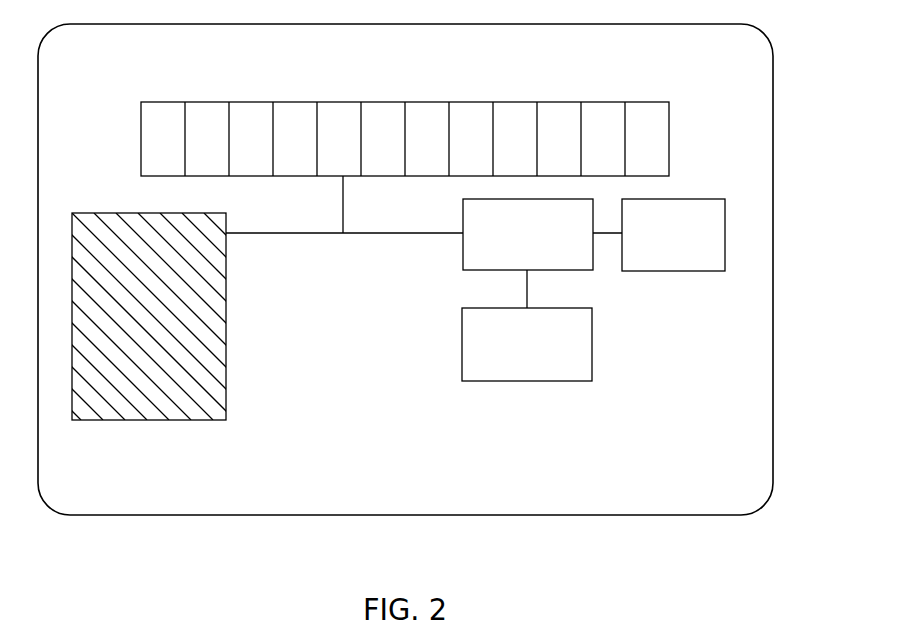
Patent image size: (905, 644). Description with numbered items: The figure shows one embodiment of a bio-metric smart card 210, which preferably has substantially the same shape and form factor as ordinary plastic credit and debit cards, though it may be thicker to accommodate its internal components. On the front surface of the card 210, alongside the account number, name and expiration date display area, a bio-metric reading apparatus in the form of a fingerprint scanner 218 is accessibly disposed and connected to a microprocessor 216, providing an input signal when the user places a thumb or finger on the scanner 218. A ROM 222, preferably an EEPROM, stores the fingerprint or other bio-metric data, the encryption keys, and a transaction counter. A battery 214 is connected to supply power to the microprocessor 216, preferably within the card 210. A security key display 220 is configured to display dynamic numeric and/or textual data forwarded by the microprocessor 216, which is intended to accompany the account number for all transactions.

The bio-metric smart card 210 is at (773, 153).
The security key display 220 is at (141, 135).
The fingerprint scanner 218 is at (92, 420).
The microprocessor 216 is at (463, 270).
The battery 214 is at (687, 272).
The ROM 222 is at (592, 367).